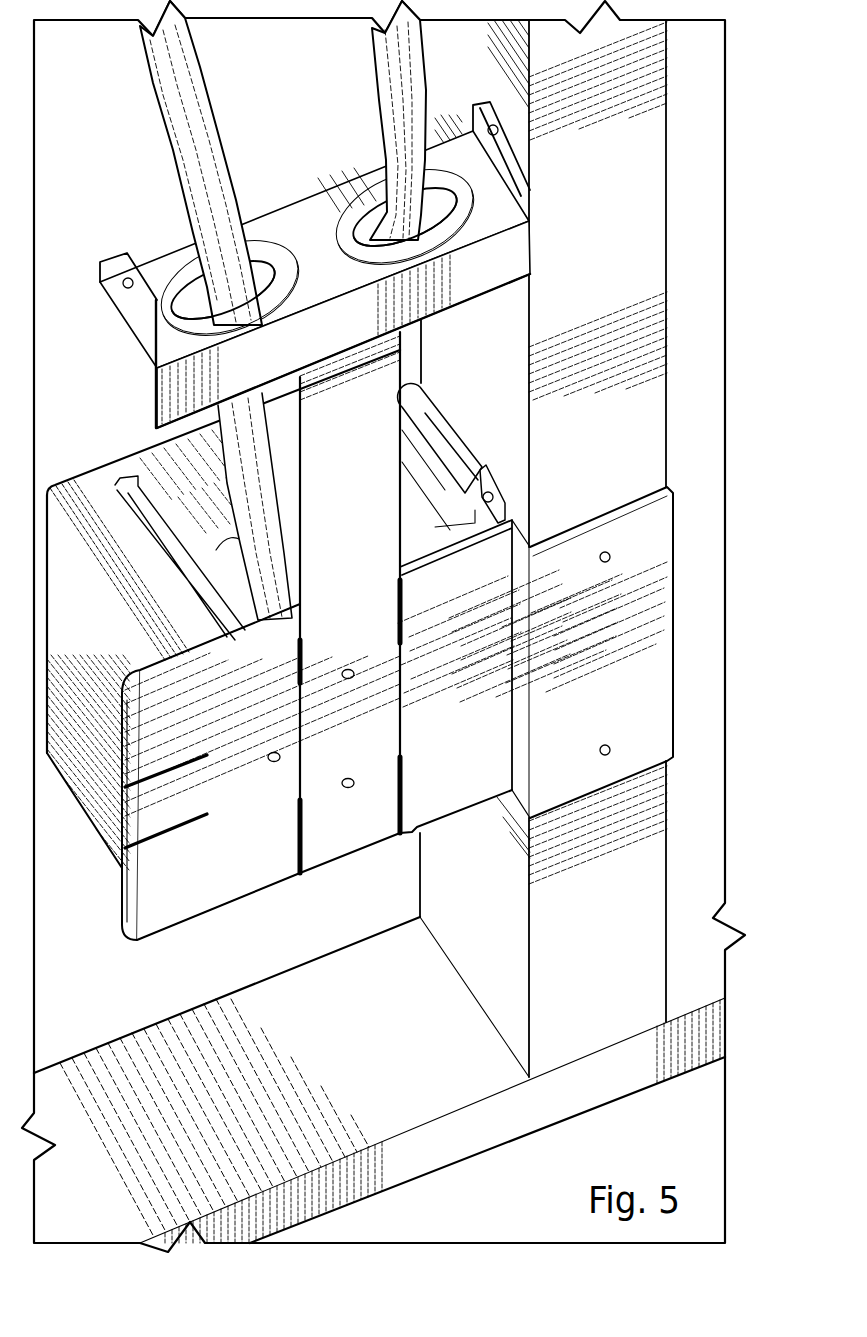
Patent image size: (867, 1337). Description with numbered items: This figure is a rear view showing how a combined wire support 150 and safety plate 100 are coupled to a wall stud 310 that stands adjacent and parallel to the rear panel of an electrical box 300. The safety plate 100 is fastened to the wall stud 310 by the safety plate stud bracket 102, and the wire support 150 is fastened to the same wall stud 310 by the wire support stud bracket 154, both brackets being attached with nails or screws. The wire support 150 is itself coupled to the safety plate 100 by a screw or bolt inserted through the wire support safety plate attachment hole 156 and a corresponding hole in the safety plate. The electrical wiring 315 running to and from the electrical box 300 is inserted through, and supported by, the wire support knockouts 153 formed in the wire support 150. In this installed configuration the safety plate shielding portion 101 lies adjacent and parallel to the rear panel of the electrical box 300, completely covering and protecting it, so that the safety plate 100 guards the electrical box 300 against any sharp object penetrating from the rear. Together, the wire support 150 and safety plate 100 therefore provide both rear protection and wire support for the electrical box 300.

The safety plate 100 is at (145, 943).
The safety plate shielding portion 101 is at (233, 847).
The safety plate stud bracket 102 is at (625, 767).
The wire support 150 is at (262, 215).
The wire support knockouts 153 is at (175, 290).
The wire support stud bracket 154 is at (520, 160).
The wire support safety plate attachment hole 156 is at (345, 789).
The electrical box 300 is at (68, 478).
The wall stud 310 is at (665, 220).
The electrical wiring 315 is at (203, 77).